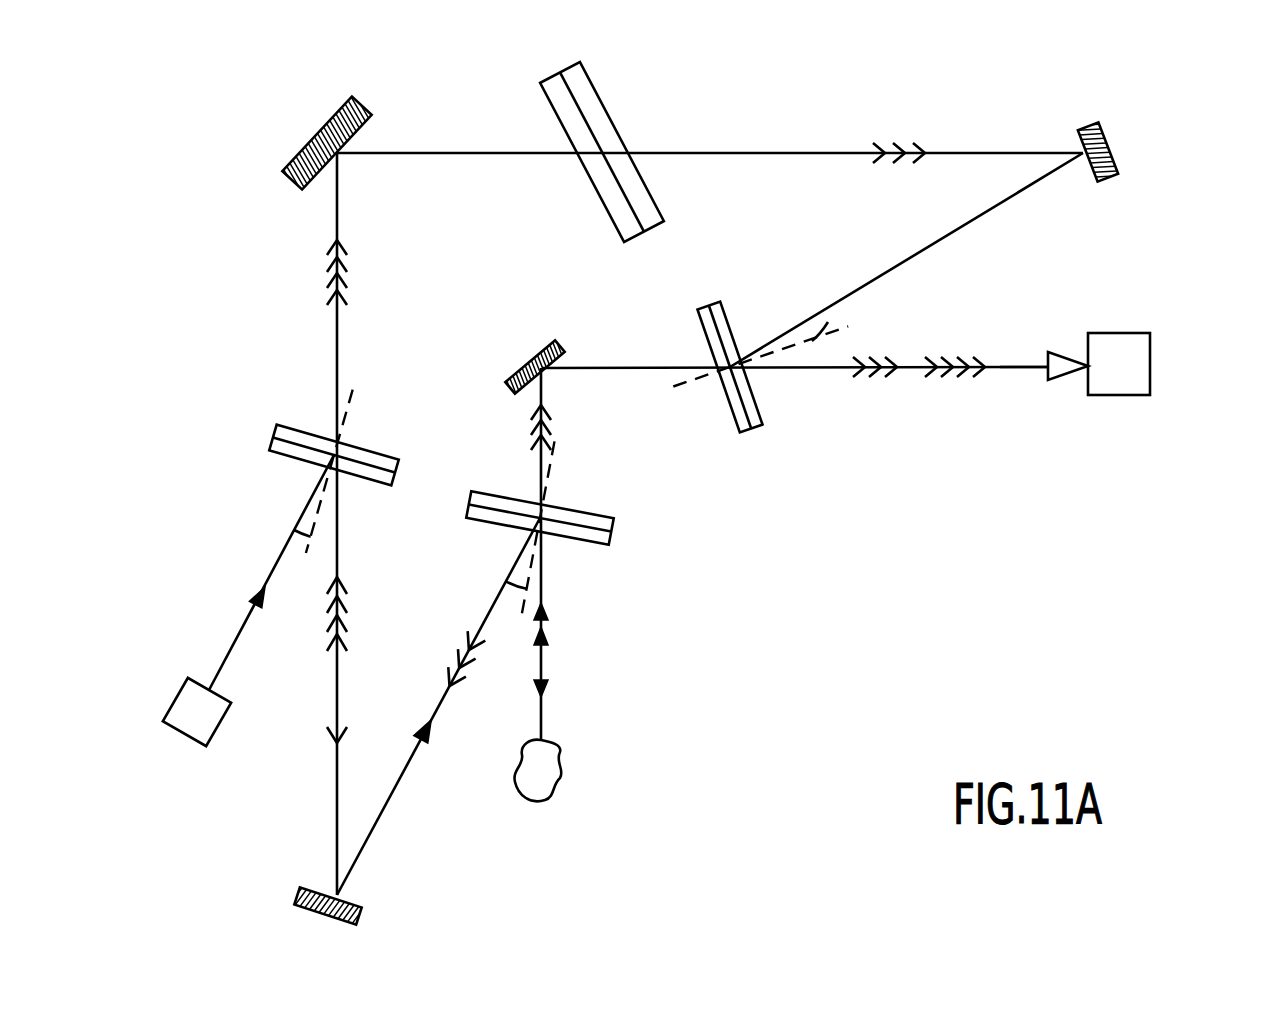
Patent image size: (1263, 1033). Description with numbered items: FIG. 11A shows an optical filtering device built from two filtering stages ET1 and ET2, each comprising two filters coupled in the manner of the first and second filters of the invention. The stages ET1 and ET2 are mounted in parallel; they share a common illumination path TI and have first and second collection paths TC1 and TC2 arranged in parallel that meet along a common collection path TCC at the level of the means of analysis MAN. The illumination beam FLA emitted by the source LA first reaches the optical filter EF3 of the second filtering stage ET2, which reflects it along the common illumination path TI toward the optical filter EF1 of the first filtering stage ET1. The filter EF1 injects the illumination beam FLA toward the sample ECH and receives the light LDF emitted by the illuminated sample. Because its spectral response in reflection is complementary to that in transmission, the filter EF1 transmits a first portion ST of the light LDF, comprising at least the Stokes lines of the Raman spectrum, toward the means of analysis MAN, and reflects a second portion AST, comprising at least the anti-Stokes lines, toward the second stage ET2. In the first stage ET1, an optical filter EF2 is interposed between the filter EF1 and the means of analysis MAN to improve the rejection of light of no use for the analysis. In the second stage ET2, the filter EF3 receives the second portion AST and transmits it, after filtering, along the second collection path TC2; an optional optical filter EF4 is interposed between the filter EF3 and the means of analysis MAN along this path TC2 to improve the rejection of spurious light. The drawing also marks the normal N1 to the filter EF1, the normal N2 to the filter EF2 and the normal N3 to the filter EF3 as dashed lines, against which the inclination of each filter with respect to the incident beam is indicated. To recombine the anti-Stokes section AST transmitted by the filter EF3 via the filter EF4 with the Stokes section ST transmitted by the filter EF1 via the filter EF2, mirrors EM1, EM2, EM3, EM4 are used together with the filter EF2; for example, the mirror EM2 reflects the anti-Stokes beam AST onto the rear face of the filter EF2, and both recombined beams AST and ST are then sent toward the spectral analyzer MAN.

The mirror EM1 is at (336, 114).
The mirror EM2 is at (1105, 132).
The mirror EM3 is at (548, 342).
The mirror EM4 is at (360, 915).
The optical filter EF1 is at (582, 541).
The optical filter EF2 is at (752, 430).
The optical filter EF3 is at (273, 444).
The optical filter EF4 is at (614, 104).
The first collection path TC1 is at (620, 368).
The second collection path TC2 is at (758, 153).
The common collection path TCC is at (1020, 366).
The common illumination path TI is at (396, 812).
The second portion of the emitted light AST is at (900, 143).
The first portion of the emitted light ST is at (533, 428).
The normal to plate EF1 N1 is at (552, 460).
The normal to plate EF2 N2 is at (793, 352).
The normal to plate EF3 N3 is at (350, 407).
The illumination beam FLA is at (548, 690).
The source LA is at (172, 700).
The light emitted by the sample LDF is at (548, 628).
The sample ECH is at (562, 780).
The means of analysis MAN is at (1150, 366).
The first filtering stage ET1 is at (691, 483).
The second filtering stage ET2 is at (410, 228).